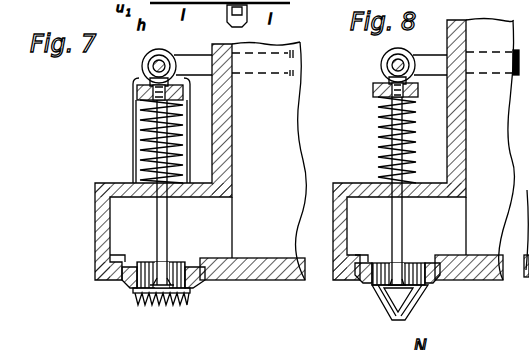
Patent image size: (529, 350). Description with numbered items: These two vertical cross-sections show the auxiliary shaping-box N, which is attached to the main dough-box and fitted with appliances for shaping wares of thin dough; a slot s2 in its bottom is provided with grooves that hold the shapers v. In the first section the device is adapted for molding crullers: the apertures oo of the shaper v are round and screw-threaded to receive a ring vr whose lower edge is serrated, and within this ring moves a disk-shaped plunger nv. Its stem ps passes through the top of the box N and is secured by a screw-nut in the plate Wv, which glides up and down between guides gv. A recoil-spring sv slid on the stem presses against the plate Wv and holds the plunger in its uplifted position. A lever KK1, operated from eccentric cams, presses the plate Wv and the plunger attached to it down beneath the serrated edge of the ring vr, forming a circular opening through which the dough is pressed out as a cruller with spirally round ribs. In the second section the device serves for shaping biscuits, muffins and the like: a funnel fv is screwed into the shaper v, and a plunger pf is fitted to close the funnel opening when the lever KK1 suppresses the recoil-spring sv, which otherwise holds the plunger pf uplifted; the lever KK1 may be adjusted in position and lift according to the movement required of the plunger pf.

In FIG. 7, the lever KK1 is at (193, 65).
In FIG. 8, the lever KK1 is at (430, 65).
In FIG. 7, the plate Wv is at (137, 89).
In FIG. 8, the plate Wv is at (373, 97).
In FIG. 7, the guides gv is at (135, 133).
In FIG. 7, the recoil-spring sv is at (140, 155).
In FIG. 8, the recoil-spring sv is at (412, 143).
In FIG. 7, the stem ps is at (157, 232).
In FIG. 7, the auxiliary shaping-box N is at (95, 218).
In FIG. 8, the auxiliary shaping-box N is at (388, 212).
In FIG. 7, the slot s2 is at (122, 259).
In FIG. 8, the slot s2 is at (365, 255).
In FIG. 7, the shaper v is at (197, 282).
In FIG. 8, the shaper v is at (366, 277).
In FIG. 7, the plunger nv is at (172, 284).
In FIG. 7, the apertures oo is at (164, 284).
In FIG. 8, the apertures oo is at (412, 268).
In FIG. 7, the ring vr is at (133, 297).
In FIG. 8, the plunger pf is at (403, 222).
In FIG. 8, the funnel fv is at (418, 292).